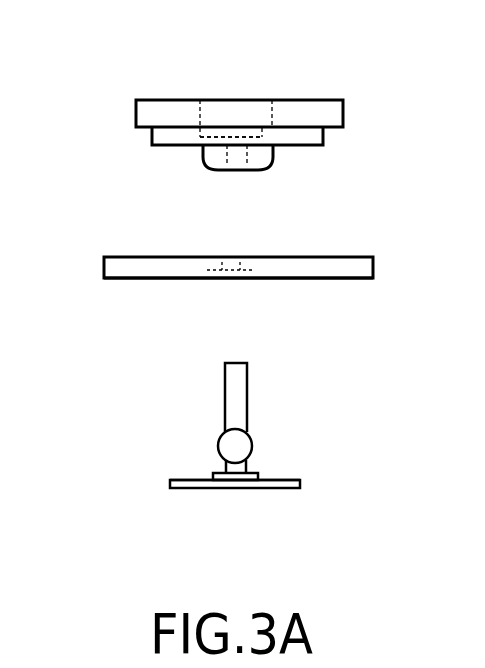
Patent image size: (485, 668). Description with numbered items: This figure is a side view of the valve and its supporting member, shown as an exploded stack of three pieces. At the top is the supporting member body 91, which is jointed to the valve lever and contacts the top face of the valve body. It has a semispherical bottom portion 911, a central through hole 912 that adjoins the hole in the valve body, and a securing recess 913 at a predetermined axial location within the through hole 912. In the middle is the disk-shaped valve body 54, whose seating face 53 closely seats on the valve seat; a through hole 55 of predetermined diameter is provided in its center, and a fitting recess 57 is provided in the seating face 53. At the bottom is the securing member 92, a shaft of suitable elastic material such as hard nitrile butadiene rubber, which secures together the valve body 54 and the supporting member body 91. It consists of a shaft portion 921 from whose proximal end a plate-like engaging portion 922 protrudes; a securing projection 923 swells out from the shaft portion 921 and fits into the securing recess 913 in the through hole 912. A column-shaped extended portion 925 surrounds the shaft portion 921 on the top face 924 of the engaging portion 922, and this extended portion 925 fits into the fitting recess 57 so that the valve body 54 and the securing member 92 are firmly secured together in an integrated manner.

The supporting member body 91 is at (152, 85).
The semispherical bottom portion 911 is at (242, 171).
The through hole 912 is at (232, 161).
The securing recess 913 is at (250, 137).
The valve body 54 is at (157, 243).
The seating face 53 is at (155, 278).
The through hole 55 is at (240, 262).
The fitting recess 57 is at (235, 278).
The securing member 92 is at (194, 404).
The shaft portion 921 is at (237, 398).
The securing projection 923 is at (233, 448).
The extended portion 925 is at (240, 478).
The top face 924 is at (290, 479).
The engaging portion 922 is at (217, 488).